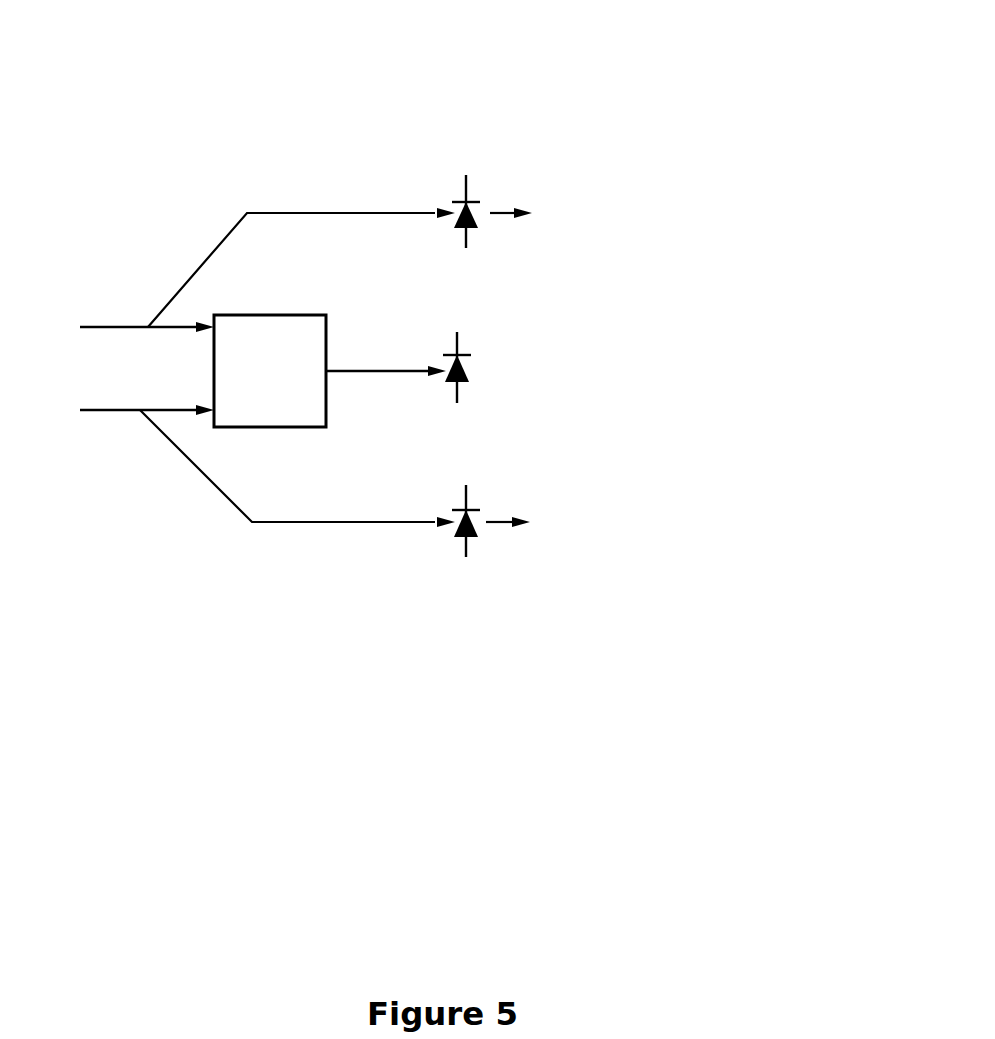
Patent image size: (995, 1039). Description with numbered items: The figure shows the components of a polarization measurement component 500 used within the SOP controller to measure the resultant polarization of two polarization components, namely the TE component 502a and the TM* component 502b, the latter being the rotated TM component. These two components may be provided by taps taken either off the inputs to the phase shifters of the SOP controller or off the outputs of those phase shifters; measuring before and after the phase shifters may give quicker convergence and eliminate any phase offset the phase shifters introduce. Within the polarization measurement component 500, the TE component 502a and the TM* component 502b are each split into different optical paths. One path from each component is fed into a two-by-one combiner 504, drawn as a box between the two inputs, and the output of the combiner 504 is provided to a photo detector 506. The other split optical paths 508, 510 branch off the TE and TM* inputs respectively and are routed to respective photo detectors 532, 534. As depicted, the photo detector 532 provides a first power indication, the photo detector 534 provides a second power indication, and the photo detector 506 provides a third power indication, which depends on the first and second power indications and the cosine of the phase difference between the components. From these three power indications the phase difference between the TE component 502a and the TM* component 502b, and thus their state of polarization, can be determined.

The polarization measurement component 500 is at (427, 38).
The TE component 502a is at (125, 327).
The TM* component 502b is at (132, 411).
The 2×1 combiner 504 is at (287, 315).
The photo detector 506 is at (466, 354).
The split optical path 508 is at (314, 213).
The split optical path 510 is at (323, 522).
The photo detector 532 is at (479, 201).
The photo detector 534 is at (474, 537).